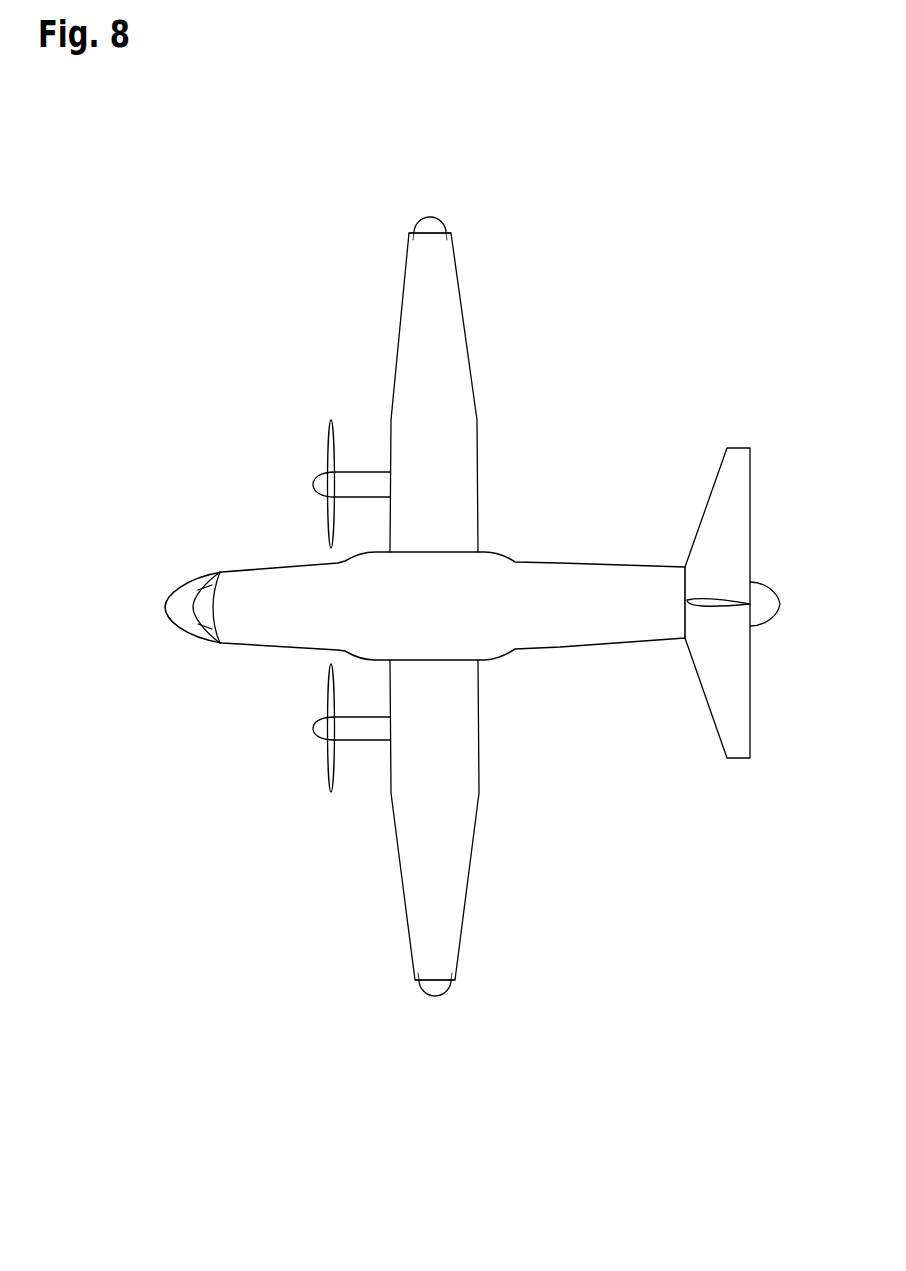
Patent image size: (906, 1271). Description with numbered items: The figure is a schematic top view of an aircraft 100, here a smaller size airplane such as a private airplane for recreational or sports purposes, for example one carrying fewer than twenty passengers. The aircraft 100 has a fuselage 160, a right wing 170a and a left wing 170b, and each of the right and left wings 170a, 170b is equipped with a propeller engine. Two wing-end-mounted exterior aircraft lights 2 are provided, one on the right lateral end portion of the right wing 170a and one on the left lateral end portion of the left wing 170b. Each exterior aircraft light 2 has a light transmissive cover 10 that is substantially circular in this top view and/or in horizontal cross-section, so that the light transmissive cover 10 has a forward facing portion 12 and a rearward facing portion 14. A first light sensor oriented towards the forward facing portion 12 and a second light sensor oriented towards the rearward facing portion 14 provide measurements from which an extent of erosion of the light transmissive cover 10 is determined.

The aircraft 100 is at (253, 468).
The fuselage 160 is at (625, 548).
The right wing 170a is at (455, 478).
The left wing 170b is at (460, 730).
The exterior aircraft light 2 is at (460, 195).
The light transmissive cover 10 is at (428, 216).
The forward facing portion 12 is at (412, 226).
The rearward facing portion 14 is at (449, 226).